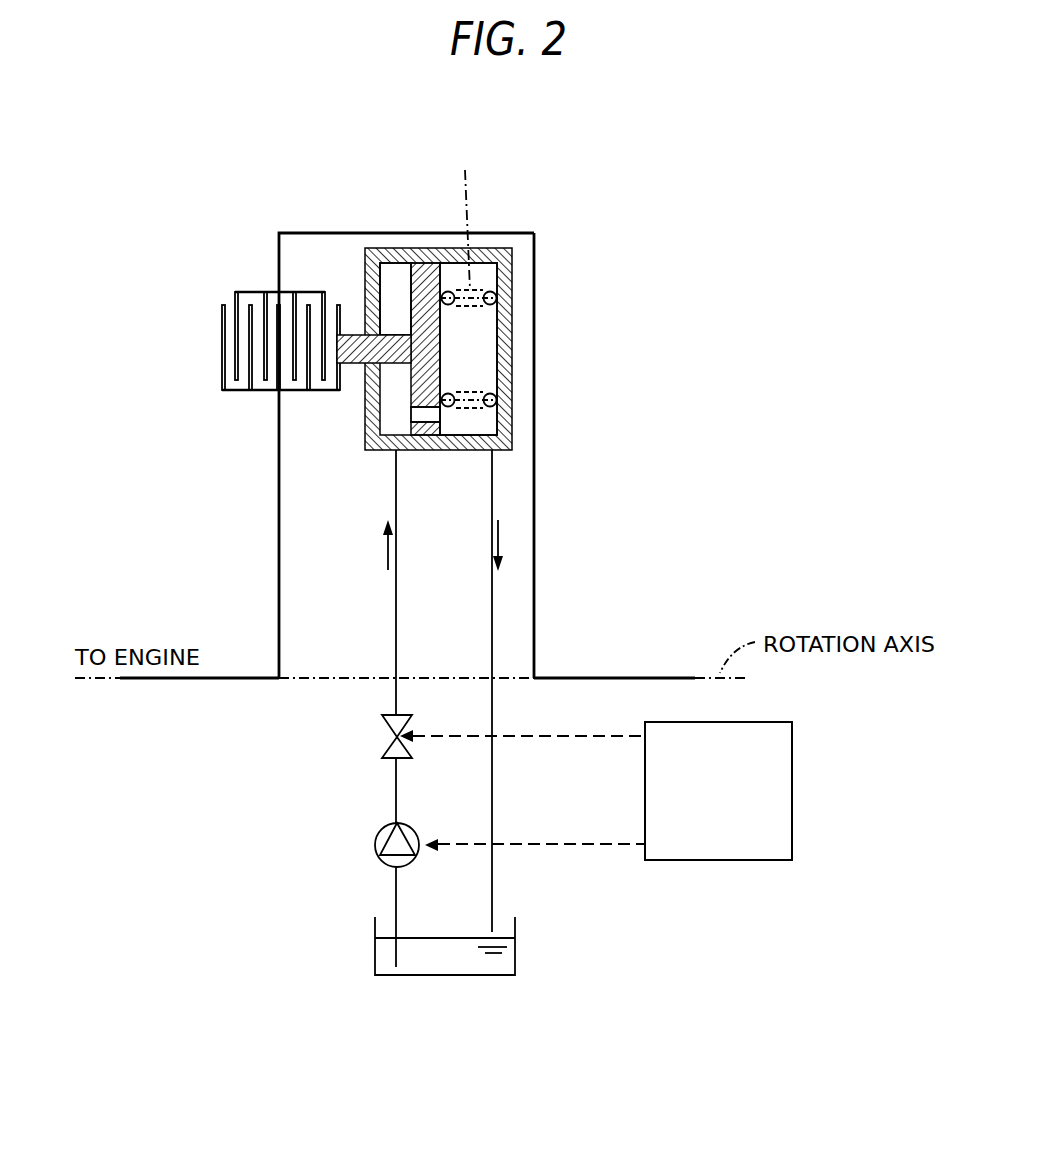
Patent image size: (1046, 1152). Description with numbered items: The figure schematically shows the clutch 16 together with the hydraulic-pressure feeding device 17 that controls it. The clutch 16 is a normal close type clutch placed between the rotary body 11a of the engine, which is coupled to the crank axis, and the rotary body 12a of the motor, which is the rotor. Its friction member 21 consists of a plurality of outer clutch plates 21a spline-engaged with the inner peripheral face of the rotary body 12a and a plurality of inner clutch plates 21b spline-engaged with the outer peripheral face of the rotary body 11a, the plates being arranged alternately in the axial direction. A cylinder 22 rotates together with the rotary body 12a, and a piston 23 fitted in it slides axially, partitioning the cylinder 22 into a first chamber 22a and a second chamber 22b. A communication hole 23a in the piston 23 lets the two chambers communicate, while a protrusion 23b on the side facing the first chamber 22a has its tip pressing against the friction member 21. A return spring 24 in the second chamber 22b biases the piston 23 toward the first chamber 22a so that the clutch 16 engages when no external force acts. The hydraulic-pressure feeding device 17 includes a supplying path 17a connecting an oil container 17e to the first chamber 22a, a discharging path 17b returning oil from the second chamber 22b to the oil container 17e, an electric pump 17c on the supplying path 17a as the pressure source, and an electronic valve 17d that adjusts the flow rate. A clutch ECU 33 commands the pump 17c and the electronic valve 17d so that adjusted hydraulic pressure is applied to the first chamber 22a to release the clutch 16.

The rotary body of the engine 11a is at (279, 532).
The rotary body of the motor 12a is at (534, 532).
The clutch 16 is at (190, 374).
The hydraulic-pressure feeding device 17 is at (450, 712).
The supplying path 17a is at (396, 642).
The discharging path 17b is at (492, 642).
The pump 17c is at (380, 850).
The electronic valve 17d is at (395, 737).
The oil container 17e is at (515, 947).
The friction member 21 is at (225, 293).
The outer clutch plates 21a is at (233, 325).
The inner clutch plates 21b is at (222, 352).
The cylinder 22 is at (385, 249).
The first chamber 22a is at (392, 320).
The second chamber 22b is at (483, 348).
The piston 23 is at (425, 262).
The communication hole 23a is at (430, 420).
The protrusion 23b is at (358, 335).
The return spring 24 is at (461, 217).
The clutch ECU 33 is at (792, 782).